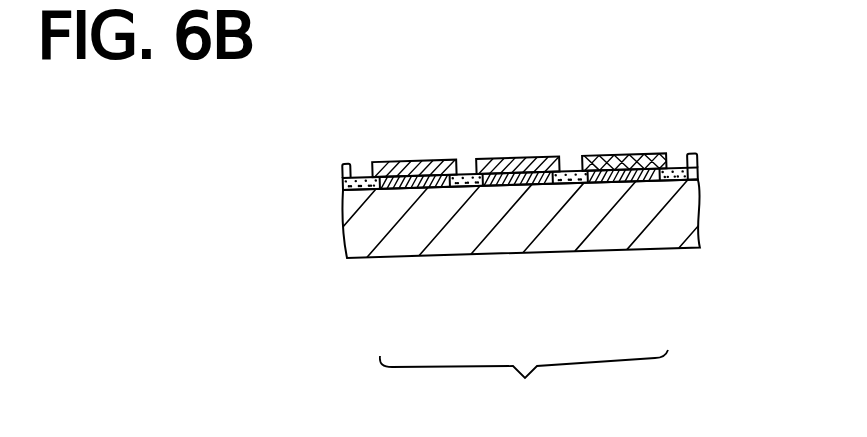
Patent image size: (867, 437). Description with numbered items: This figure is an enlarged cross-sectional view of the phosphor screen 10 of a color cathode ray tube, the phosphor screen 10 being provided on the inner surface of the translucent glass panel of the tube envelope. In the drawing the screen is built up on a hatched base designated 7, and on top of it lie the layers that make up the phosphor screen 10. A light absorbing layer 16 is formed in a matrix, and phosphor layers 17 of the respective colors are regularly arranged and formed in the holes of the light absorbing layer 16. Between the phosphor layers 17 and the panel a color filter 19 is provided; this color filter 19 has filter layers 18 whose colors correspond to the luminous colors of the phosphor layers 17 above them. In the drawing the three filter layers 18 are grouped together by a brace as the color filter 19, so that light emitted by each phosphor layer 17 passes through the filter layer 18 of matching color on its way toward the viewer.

The substrate 7 is at (595, 235).
The phosphor screen 10 is at (527, 249).
The light absorbing layer 16 is at (570, 172).
The phosphor layers 17 is at (515, 162).
The filter layers 18 is at (402, 188).
The color filter 19 is at (524, 384).